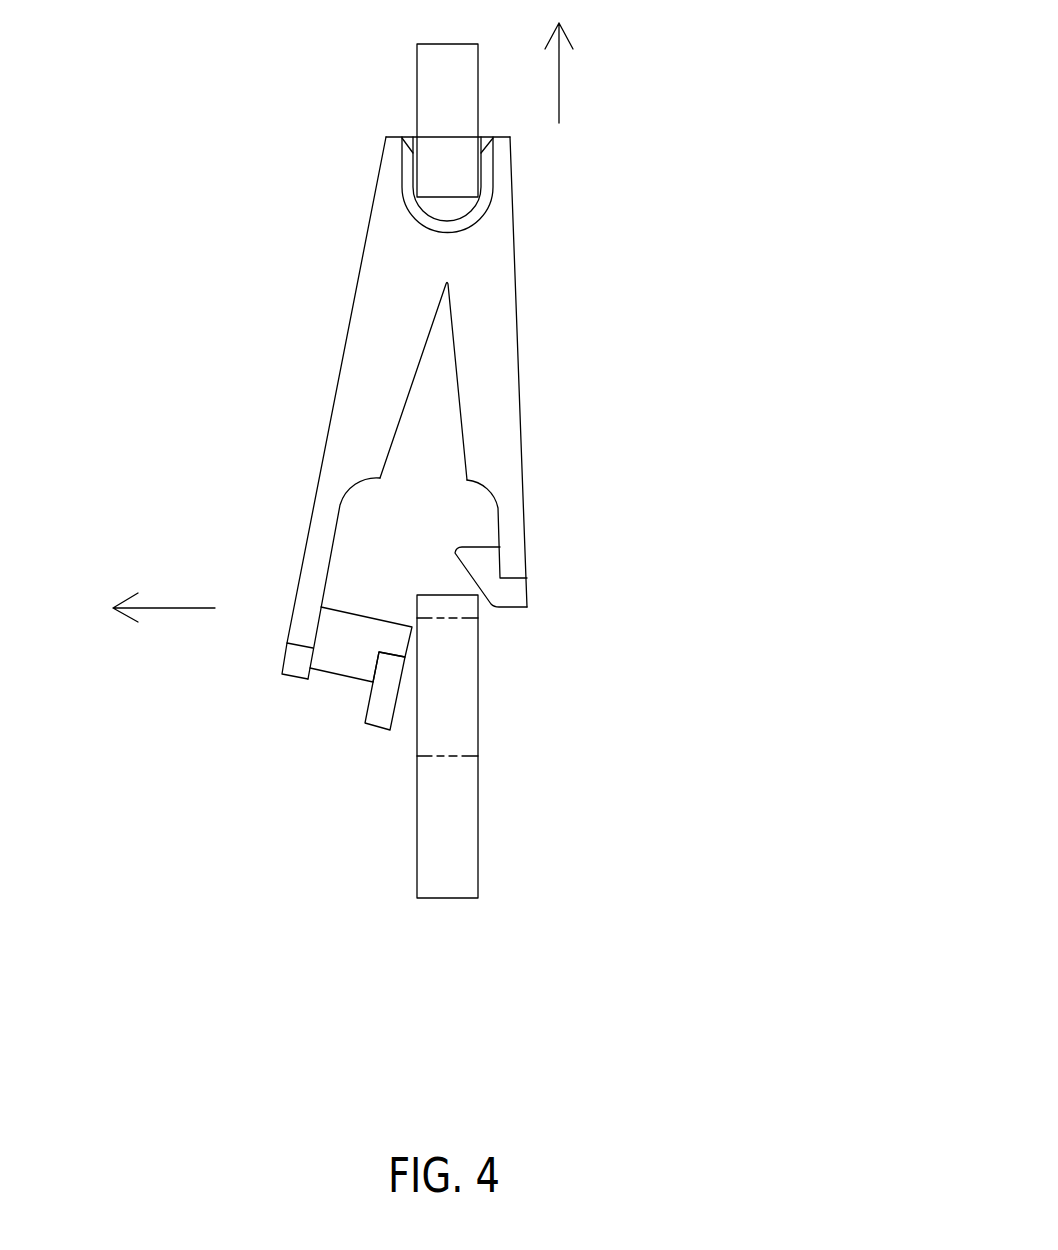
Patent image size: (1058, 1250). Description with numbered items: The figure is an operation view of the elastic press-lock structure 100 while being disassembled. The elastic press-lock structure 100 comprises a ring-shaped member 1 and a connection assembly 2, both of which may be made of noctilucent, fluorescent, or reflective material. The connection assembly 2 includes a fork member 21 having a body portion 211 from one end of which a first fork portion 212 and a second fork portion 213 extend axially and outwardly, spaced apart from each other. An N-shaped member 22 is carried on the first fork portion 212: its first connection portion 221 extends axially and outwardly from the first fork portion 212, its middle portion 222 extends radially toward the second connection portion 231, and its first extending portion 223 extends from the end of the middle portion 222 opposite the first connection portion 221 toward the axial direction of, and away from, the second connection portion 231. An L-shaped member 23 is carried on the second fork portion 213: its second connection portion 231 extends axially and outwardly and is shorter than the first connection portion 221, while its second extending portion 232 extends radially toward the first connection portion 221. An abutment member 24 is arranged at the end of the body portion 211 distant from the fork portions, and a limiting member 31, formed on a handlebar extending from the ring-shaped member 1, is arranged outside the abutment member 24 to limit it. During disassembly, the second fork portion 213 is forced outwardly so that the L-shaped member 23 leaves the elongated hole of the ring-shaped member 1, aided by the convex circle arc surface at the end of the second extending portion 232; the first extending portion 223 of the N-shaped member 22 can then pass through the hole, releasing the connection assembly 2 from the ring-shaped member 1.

The elastic press-lock structure 100 is at (592, 118).
The ring-shaped member 1 is at (417, 880).
The connection assembly 2 is at (167, 350).
The fork member 21 is at (512, 173).
The body portion 211 is at (438, 257).
The first fork portion 212 is at (372, 367).
The second fork portion 213 is at (478, 363).
The N-shaped member 22 is at (282, 662).
The first connection portion 221 is at (313, 548).
The middle portion 222 is at (348, 648).
The first extending portion 223 is at (377, 712).
The L-shaped member 23 is at (528, 597).
The second connection portion 231 is at (507, 514).
The second extending portion 232 is at (477, 565).
The abutment member 24 is at (443, 210).
The limiting member 31 is at (433, 163).